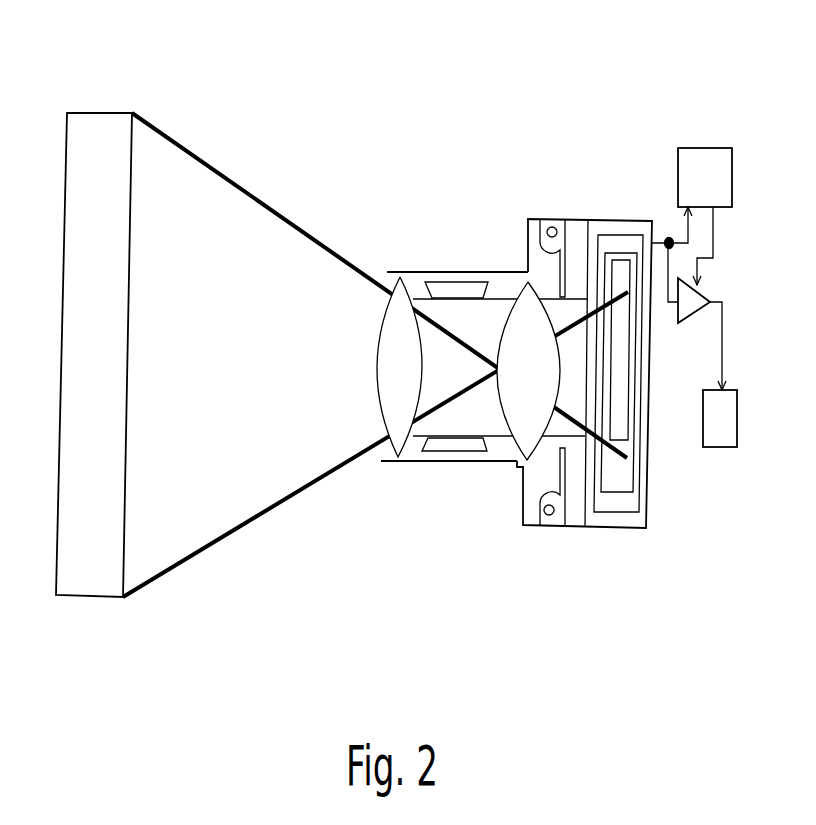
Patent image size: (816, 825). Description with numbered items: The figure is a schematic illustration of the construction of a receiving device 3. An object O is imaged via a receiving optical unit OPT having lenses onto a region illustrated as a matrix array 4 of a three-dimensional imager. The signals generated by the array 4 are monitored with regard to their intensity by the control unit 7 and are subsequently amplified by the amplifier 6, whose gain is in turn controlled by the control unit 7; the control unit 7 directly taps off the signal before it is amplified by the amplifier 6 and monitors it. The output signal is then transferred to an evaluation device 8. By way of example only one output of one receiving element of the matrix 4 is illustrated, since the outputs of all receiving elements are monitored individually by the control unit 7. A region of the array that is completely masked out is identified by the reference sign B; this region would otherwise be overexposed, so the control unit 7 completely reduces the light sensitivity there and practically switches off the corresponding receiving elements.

The object O is at (97, 133).
The receiving device 3 is at (457, 210).
The receiving optical unit OPT is at (407, 453).
The array 4 is at (613, 513).
The completely masked out region B is at (620, 367).
The amplifier 6 is at (687, 300).
The control unit 7 is at (703, 165).
The evaluation device 8 is at (718, 433).